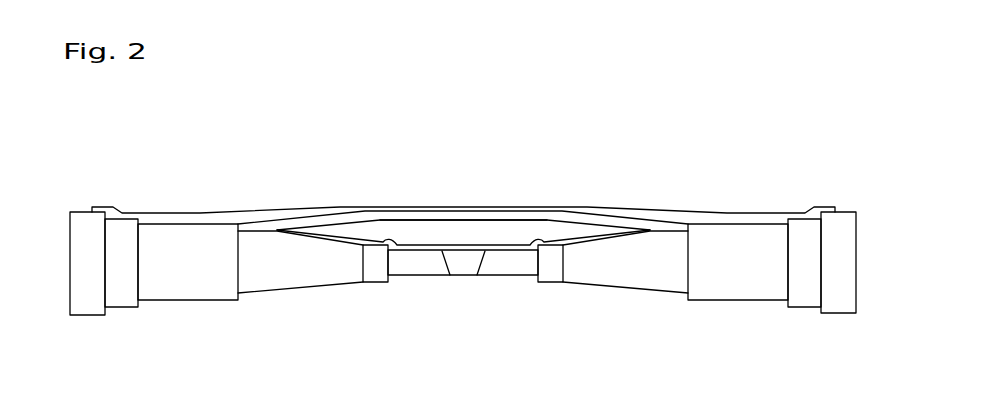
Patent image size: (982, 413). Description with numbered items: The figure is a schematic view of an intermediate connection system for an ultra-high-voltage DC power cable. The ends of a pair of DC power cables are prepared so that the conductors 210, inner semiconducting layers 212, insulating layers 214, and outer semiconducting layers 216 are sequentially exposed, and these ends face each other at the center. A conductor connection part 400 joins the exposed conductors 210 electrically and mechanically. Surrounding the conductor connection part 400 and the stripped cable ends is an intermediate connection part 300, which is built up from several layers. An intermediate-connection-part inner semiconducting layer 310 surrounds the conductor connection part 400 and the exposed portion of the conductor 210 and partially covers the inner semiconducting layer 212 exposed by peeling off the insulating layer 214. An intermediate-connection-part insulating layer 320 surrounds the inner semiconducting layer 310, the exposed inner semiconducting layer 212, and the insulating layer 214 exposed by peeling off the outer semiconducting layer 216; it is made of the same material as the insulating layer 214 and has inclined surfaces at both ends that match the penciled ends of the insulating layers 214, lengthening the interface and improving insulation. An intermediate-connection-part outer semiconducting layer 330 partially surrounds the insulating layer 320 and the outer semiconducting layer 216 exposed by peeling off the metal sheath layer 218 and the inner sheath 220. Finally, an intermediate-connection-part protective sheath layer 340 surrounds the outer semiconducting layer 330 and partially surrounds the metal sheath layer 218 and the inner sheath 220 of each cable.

The conductor 210 is at (422, 275).
The inner semiconducting layer 212 is at (375, 282).
The insulating layer 214 is at (322, 285).
The outer semiconducting layer 216 is at (223, 297).
The metal sheath layer 218 is at (127, 302).
The inner sheath 220 is at (88, 305).
The intermediate connection part 300 is at (463, 171).
The intermediate-connection-part inner semiconducting layer 310 is at (390, 134).
The intermediate-connection-part insulating layer 320 is at (492, 225).
The intermediate-connection-part outer semiconducting layer 330 is at (445, 220).
The intermediate-connection-part protective sheath layer 340 is at (387, 208).
The conductor connection part 400 is at (462, 275).